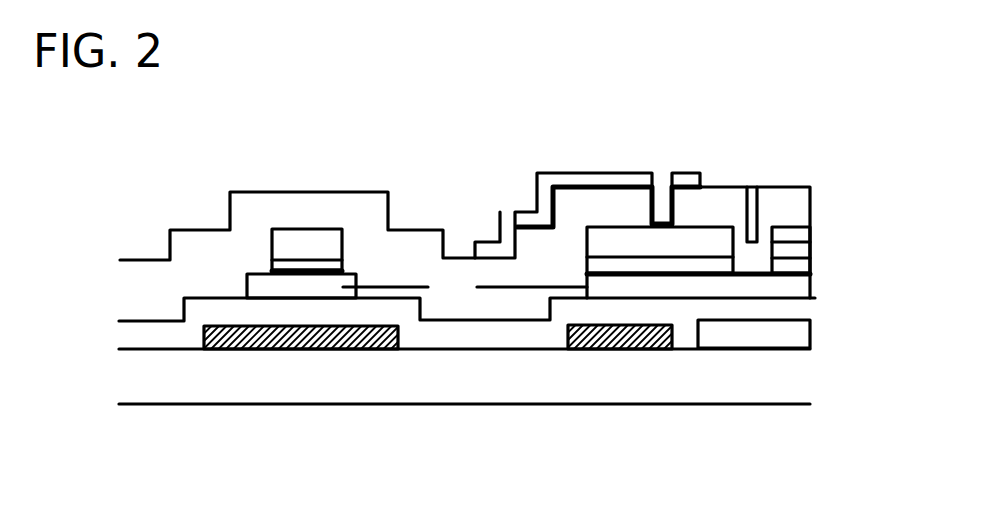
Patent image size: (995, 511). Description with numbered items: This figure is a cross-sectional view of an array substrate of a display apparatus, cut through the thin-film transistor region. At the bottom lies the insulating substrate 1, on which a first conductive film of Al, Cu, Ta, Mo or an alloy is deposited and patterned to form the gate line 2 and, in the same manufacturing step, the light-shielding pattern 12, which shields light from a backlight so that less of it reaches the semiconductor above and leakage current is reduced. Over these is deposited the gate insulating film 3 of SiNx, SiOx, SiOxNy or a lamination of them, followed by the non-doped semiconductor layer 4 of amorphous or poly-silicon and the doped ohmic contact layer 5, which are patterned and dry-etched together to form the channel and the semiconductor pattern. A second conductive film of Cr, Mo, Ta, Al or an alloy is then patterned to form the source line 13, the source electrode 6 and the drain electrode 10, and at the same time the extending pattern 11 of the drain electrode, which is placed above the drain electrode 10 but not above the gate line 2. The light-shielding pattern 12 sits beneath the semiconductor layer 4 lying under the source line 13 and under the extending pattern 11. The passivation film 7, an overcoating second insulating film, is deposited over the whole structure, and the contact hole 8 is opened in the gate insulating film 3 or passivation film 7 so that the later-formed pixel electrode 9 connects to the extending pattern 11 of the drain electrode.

The insulating substrate 1 is at (443, 378).
The gate line 2 is at (787, 332).
The gate insulating film 3 is at (532, 338).
The non-doped semiconductor layer 4 is at (467, 298).
The ohmic contact layer 5 is at (607, 263).
The source electrode 6 is at (780, 245).
The passivation film 7 is at (277, 193).
The contact hole 8 is at (652, 215).
The pixel electrode 9 is at (563, 173).
The drain electrode 10 is at (717, 243).
The extending pattern of the drain electrode 11 is at (630, 250).
The light-shielding pattern 12 is at (363, 330).
The source line 13 is at (295, 238).